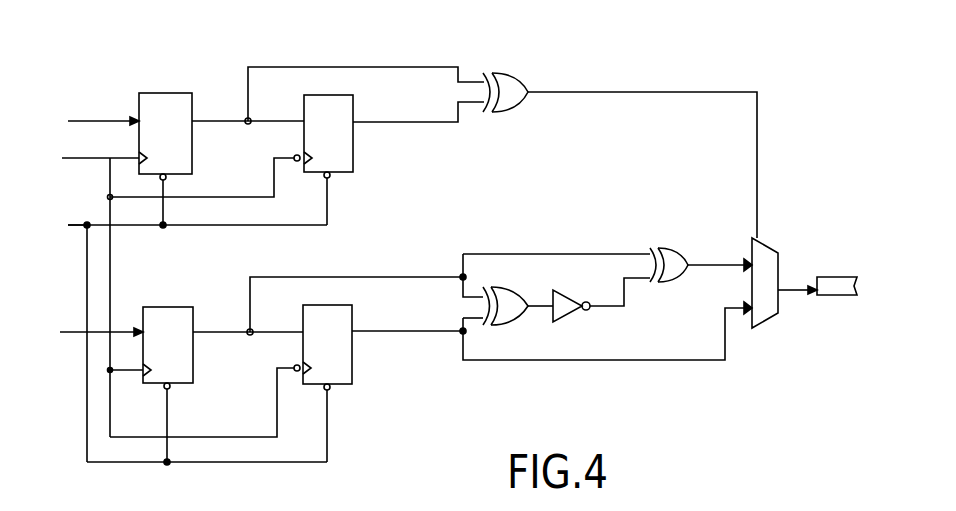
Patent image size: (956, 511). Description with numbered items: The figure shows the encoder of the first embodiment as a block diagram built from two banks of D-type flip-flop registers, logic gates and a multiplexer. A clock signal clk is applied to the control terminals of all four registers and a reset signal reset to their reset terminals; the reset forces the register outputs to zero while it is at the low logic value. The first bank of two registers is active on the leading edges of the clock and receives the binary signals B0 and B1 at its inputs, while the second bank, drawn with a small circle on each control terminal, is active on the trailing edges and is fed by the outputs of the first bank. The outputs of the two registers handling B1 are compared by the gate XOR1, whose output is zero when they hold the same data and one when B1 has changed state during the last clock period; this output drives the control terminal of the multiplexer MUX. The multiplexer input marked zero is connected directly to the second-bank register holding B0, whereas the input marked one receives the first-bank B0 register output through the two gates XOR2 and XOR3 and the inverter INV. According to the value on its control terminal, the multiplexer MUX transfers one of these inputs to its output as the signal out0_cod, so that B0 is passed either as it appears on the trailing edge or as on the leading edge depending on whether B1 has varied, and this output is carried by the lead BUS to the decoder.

The binary signal B1 is at (92, 109).
The binary signal B0 is at (90, 319).
The clock signal clk is at (91, 146).
The reset signal reset is at (62, 211).
The XOR logic gate XOR1 is at (499, 69).
The XOR logic gate XOR2 is at (682, 247).
The XOR logic gate XOR3 is at (513, 321).
The inverter INV is at (601, 313).
The multiplexer MUX is at (777, 305).
The lead BUS is at (829, 293).